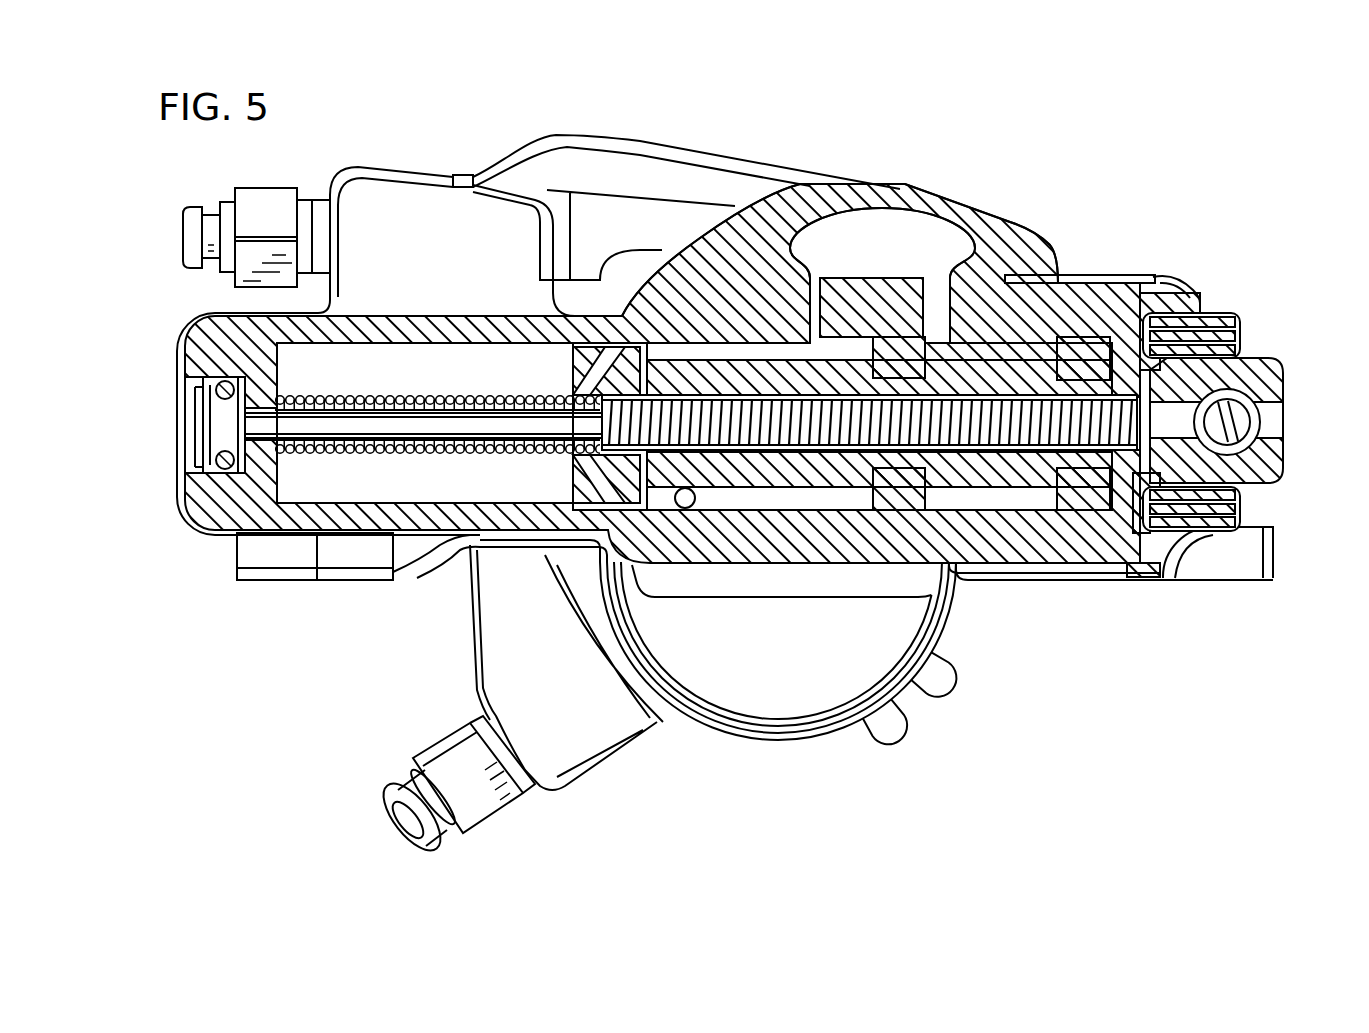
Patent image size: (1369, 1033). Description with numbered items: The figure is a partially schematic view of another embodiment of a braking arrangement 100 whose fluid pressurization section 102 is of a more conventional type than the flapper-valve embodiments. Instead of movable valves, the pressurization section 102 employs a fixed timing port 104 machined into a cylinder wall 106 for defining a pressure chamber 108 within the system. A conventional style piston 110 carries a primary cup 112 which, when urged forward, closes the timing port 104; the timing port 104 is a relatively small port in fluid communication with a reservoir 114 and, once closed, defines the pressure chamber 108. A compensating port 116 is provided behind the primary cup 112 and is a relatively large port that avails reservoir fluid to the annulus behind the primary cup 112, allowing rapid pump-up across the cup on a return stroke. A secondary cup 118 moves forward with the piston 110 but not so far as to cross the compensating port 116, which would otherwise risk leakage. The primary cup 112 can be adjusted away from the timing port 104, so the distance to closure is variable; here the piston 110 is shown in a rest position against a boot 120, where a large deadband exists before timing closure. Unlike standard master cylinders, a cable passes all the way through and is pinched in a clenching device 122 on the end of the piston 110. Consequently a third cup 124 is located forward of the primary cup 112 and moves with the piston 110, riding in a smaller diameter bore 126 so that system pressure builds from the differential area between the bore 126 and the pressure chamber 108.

The braking arrangement 100 is at (1042, 79).
The fluid pressurization section 102 is at (182, 510).
The timing port 104 is at (830, 337).
The cylinder wall 106 is at (670, 340).
The pressure chamber 108 is at (748, 350).
The piston 110 is at (753, 493).
The primary cup 112 is at (908, 512).
The reservoir 114 is at (915, 262).
The compensating port 116 is at (950, 340).
The secondary cup 118 is at (1077, 512).
The boot 120 is at (1152, 277).
The clenching device 122 is at (1268, 422).
The third cup 124 is at (578, 470).
The bore 126 is at (453, 347).